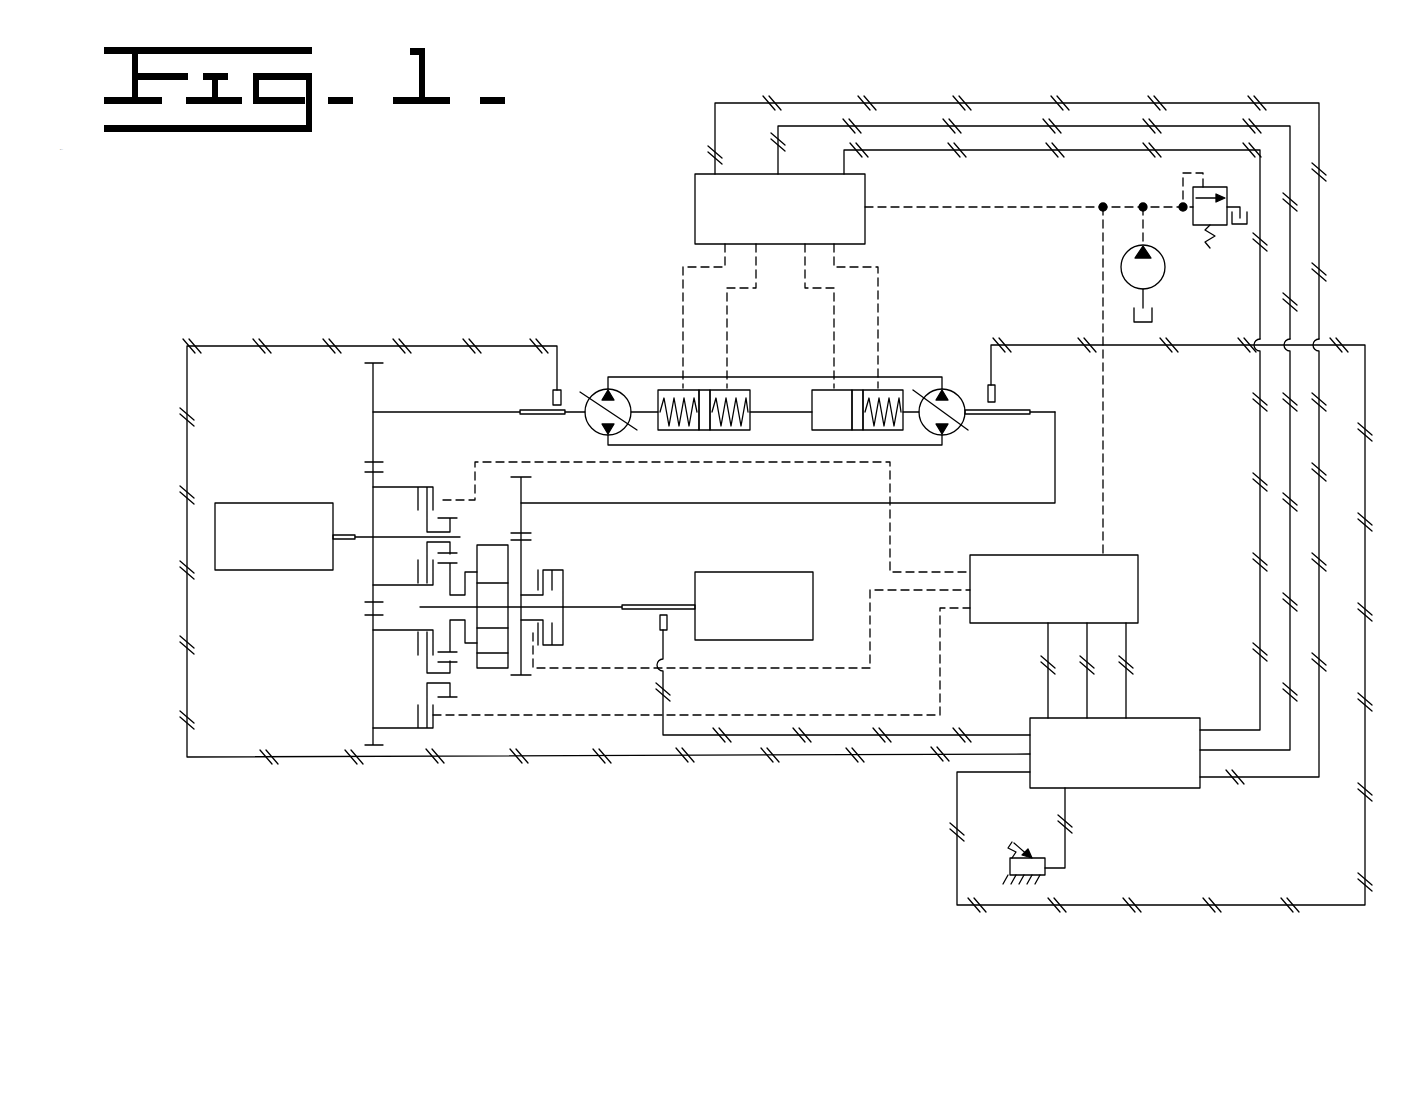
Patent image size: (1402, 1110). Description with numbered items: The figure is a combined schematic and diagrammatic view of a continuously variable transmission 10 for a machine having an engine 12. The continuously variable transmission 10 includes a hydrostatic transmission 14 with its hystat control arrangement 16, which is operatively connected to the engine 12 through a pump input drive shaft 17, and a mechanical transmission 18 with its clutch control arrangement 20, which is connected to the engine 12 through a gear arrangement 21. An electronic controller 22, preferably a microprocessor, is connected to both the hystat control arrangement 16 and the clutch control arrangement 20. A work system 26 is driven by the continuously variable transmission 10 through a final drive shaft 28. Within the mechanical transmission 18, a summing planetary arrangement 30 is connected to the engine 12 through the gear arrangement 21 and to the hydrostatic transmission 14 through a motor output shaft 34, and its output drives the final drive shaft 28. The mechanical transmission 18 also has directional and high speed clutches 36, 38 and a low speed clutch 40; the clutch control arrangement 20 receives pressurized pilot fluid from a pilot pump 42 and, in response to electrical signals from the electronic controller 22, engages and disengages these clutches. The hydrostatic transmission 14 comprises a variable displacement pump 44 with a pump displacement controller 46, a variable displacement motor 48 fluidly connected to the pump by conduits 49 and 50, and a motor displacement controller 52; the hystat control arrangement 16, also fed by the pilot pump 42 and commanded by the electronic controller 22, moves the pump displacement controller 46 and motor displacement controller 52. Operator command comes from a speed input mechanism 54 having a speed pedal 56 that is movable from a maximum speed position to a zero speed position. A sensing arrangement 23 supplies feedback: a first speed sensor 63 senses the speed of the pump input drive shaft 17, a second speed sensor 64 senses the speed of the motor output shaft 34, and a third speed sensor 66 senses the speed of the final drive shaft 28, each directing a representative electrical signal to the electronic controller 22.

The continuously variable transmission 10 is at (452, 247).
The engine 12 is at (280, 502).
The hydrostatic transmission 14 is at (557, 247).
The hystat control arrangement 16 is at (637, 209).
The pump input drive shaft 17 is at (440, 412).
The mechanical transmission 18 is at (540, 548).
The clutch control arrangement 20 is at (957, 552).
The gear arrangement 21 is at (362, 623).
The electronic controller 22 is at (1165, 718).
The sensing arrangement 23 is at (920, 785).
The work system 26 is at (735, 572).
The final drive shaft 28 is at (677, 605).
The summing planetary arrangement 30 is at (540, 673).
The motor output shaft 34 is at (700, 503).
The directional and high speed clutch 36 is at (418, 496).
The directional and high speed clutch 38 is at (416, 718).
The low speed clutch 40 is at (535, 576).
The pilot pump 42 is at (1165, 267).
The variable displacement pump 44 is at (595, 395).
The pump displacement controller 46 is at (657, 393).
The variable displacement motor 48 is at (953, 390).
The conduit 49 is at (753, 375).
The conduit 50 is at (917, 447).
The motor displacement controller 52 is at (902, 392).
The speed input mechanism 54 is at (983, 877).
The speed pedal 56 is at (1016, 842).
The first speed sensor 63 is at (553, 395).
The second speed sensor 64 is at (998, 393).
The third speed sensor 66 is at (655, 620).